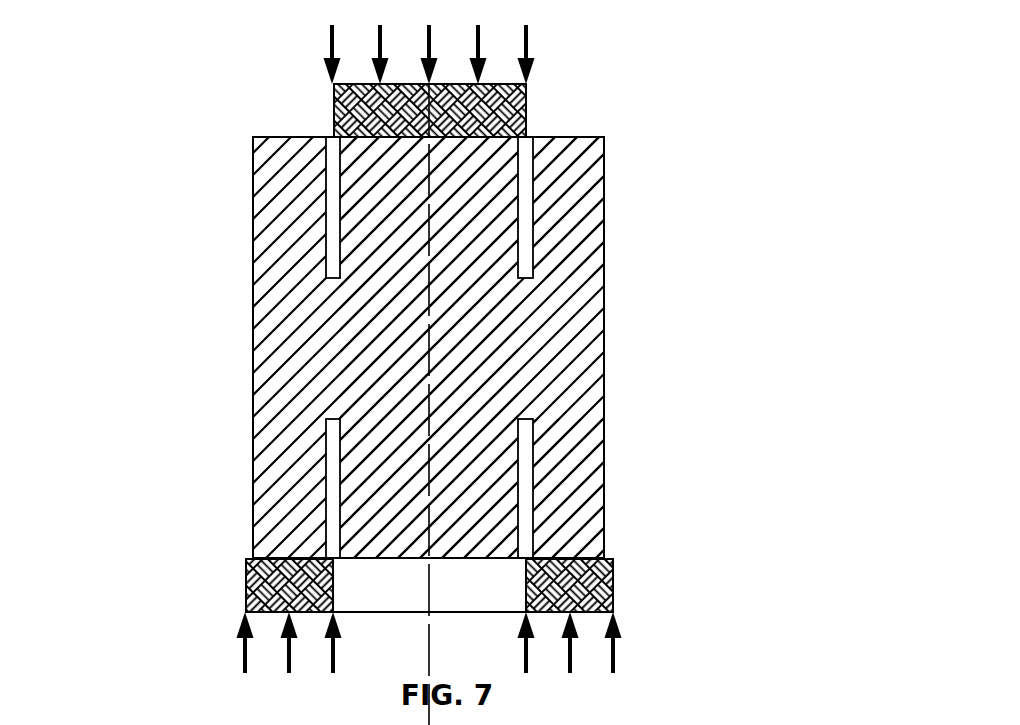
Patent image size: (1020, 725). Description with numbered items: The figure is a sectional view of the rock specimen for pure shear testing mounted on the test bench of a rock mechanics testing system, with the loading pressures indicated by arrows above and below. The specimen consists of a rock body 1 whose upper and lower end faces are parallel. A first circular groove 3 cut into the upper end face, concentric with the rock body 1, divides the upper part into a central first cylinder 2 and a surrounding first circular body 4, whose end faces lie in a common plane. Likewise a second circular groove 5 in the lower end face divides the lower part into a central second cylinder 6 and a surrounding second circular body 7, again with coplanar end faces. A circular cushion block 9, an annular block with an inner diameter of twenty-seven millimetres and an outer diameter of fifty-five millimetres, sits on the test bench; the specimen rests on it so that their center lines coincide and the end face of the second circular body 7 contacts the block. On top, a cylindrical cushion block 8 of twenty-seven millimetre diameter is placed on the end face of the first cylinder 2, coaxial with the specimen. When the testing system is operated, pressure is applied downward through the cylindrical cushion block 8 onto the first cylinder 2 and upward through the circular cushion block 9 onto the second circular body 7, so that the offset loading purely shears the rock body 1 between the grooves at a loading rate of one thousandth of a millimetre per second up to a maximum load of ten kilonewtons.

The rock body 1 is at (557, 353).
The first cylinder 2 is at (493, 178).
The first circular groove 3 is at (332, 167).
The first circular body 4 is at (577, 188).
The second circular groove 5 is at (332, 533).
The second cylinder 6 is at (443, 486).
The second circular body 7 is at (572, 500).
The cylindrical cushion block 8 is at (493, 107).
The circular cushion block 9 is at (580, 593).